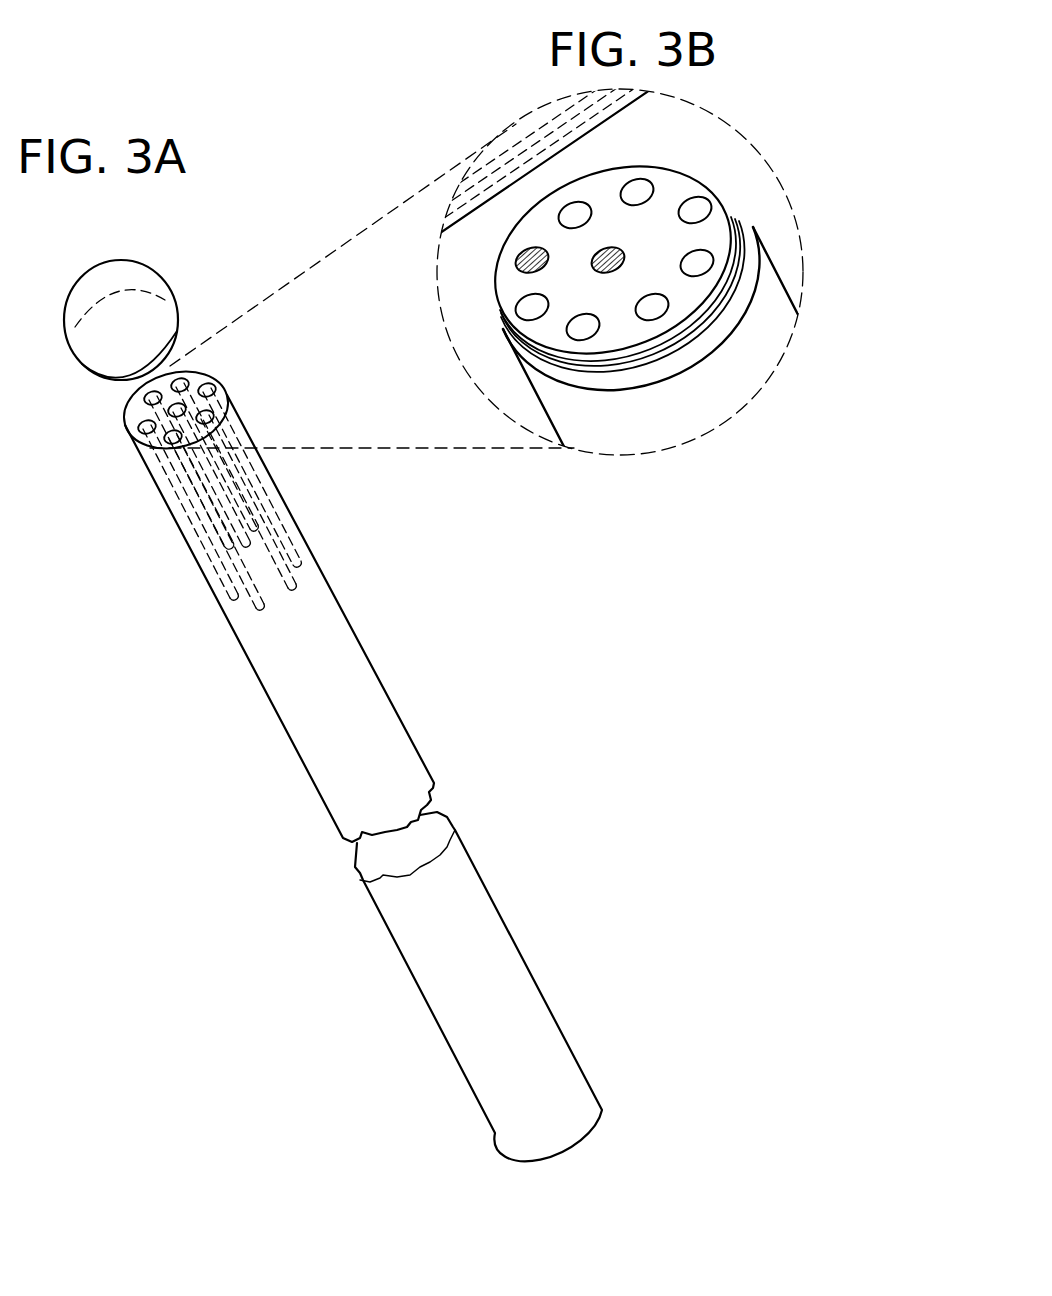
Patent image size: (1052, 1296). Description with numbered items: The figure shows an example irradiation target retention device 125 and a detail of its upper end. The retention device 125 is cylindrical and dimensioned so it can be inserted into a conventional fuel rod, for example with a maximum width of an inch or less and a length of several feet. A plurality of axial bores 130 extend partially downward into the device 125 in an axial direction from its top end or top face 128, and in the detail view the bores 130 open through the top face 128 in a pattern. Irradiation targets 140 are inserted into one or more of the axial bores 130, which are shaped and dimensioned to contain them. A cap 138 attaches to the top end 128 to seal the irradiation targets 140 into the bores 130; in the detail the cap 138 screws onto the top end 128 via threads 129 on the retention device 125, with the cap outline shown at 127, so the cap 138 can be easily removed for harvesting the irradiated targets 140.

In FIG. 3A, the irradiation target retention device 125 is at (252, 752).
In FIG. 3B, the irradiation target retention device 125 is at (767, 360).
In FIG. 3B, the cap sleeve edge 127 is at (534, 136).
In FIG. 3A, the top end/top face 128 is at (193, 371).
In FIG. 3B, the top end/top face 128 is at (613, 282).
In FIG. 3B, the threads 129 is at (748, 226).
In FIG. 3A, the axial bores 130 is at (205, 547).
In FIG. 3B, the axial bores 130 is at (583, 327).
In FIG. 3A, the cap 138 is at (67, 298).
In FIG. 3B, the cap 138 is at (457, 222).
In FIG. 3B, the irradiation targets 140 is at (604, 257).